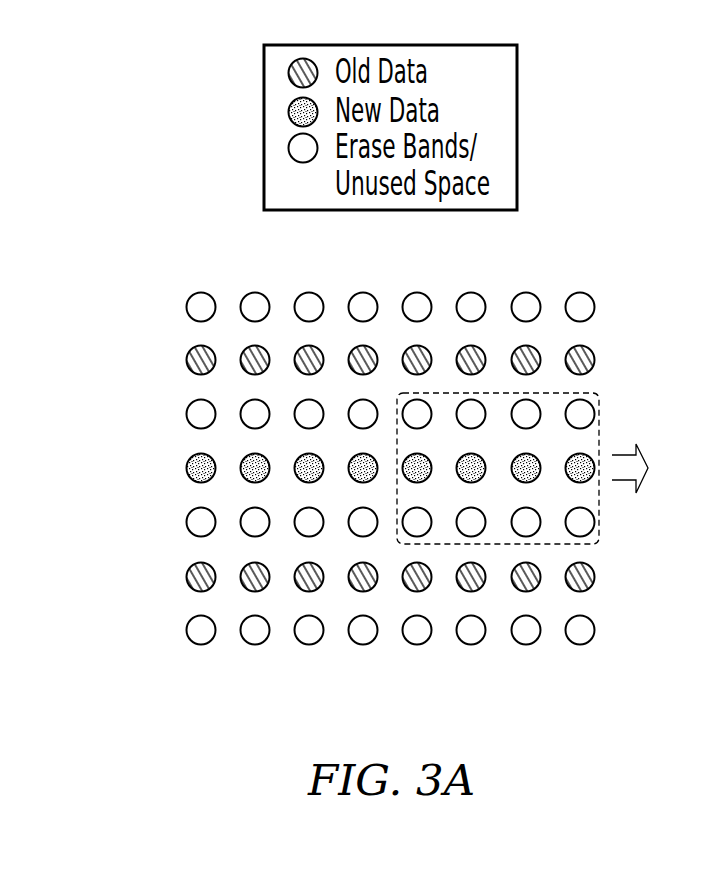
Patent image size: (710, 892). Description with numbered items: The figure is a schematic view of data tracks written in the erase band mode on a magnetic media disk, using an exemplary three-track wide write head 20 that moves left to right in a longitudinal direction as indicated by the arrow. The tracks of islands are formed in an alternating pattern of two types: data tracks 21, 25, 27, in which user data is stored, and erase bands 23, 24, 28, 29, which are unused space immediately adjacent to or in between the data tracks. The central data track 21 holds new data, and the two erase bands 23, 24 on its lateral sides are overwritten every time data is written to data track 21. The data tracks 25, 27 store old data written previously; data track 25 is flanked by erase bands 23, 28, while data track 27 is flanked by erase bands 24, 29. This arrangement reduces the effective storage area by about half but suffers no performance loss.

The write head 20 is at (600, 419).
The data track 21 is at (181, 467).
The erase band 23 is at (181, 522).
The erase band 24 is at (181, 411).
The data track 25 is at (181, 574).
The data track 27 is at (181, 357).
The erase band 28 is at (181, 627).
The erase band 29 is at (181, 303).